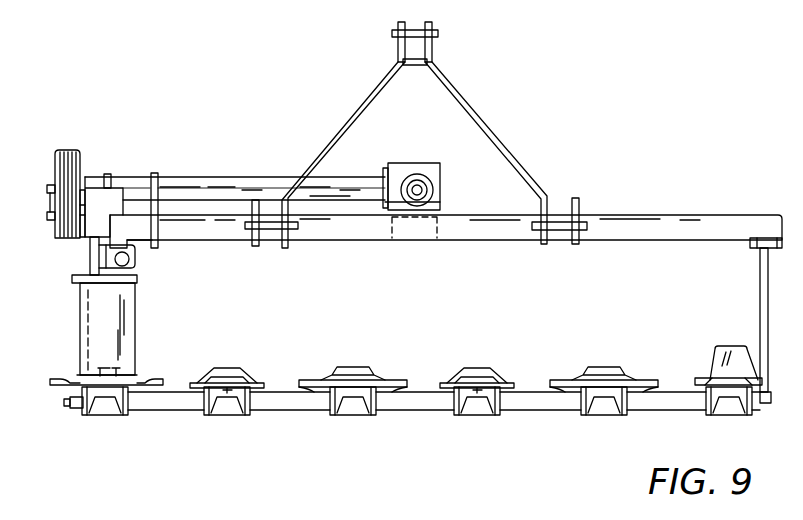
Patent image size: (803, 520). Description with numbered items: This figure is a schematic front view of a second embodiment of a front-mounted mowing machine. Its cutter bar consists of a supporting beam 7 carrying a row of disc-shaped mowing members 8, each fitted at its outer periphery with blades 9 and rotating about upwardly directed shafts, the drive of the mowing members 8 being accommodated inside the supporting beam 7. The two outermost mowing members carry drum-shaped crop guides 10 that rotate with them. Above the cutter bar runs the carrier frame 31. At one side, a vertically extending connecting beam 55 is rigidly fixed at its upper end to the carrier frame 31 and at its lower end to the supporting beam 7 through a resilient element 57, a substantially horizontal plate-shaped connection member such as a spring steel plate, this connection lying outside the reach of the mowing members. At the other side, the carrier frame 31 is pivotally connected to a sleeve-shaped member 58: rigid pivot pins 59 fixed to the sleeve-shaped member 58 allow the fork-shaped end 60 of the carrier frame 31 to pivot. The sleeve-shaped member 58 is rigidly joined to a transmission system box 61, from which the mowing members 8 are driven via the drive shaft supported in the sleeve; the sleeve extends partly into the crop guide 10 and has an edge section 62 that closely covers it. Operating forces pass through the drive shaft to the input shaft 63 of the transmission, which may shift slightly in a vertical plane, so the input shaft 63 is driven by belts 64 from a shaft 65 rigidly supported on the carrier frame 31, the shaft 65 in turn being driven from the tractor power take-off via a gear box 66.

The supporting beam 7 is at (565, 412).
The mowing members 8 is at (152, 378).
The blades 9 is at (284, 388).
The crop guide 10 is at (88, 315).
The carrier frame 31 is at (658, 220).
The connecting beam 55 is at (760, 265).
The resilient element 57 is at (753, 415).
The sleeve-shaped member 58 is at (91, 255).
The pivot pins 59 is at (130, 259).
The fork-shaped end 60 is at (138, 231).
The transmission system box 61 is at (115, 193).
The edge section 62 is at (72, 280).
The input shaft 63 is at (48, 216).
The belts 64 is at (67, 148).
The shaft 65 is at (83, 188).
The gear box 66 is at (442, 149).